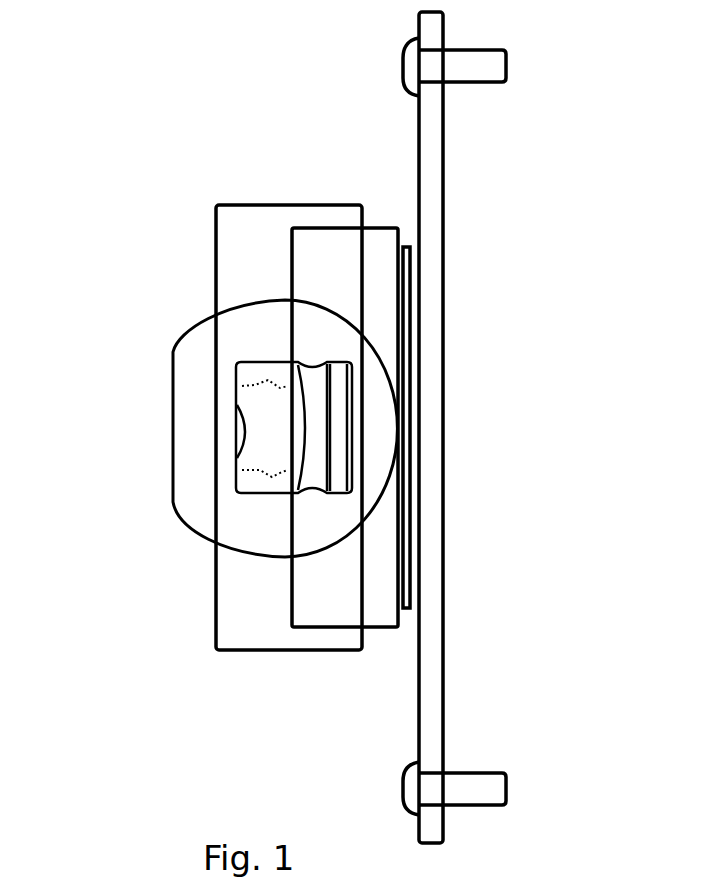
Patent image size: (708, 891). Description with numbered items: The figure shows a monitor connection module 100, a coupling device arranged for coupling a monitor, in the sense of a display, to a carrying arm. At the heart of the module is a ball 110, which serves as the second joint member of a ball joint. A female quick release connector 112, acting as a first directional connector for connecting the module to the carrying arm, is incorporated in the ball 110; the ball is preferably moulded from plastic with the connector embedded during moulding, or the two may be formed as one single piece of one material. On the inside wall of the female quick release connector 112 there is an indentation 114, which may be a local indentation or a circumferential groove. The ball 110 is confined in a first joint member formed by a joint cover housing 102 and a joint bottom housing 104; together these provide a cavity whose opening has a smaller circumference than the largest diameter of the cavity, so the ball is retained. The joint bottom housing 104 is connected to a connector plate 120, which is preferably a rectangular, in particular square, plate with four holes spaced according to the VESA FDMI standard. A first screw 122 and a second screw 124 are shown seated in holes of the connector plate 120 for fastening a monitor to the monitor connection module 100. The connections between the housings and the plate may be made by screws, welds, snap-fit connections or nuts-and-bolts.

The monitor connection module 100 is at (66, 62).
The joint cover housing 102 is at (243, 247).
The joint bottom housing 104 is at (385, 297).
The ball 110 is at (208, 530).
The female quick release connector 112 is at (238, 480).
The indentation 114 is at (267, 383).
The connector plate 120 is at (443, 153).
The first screw 122 is at (458, 45).
The second screw 124 is at (478, 783).